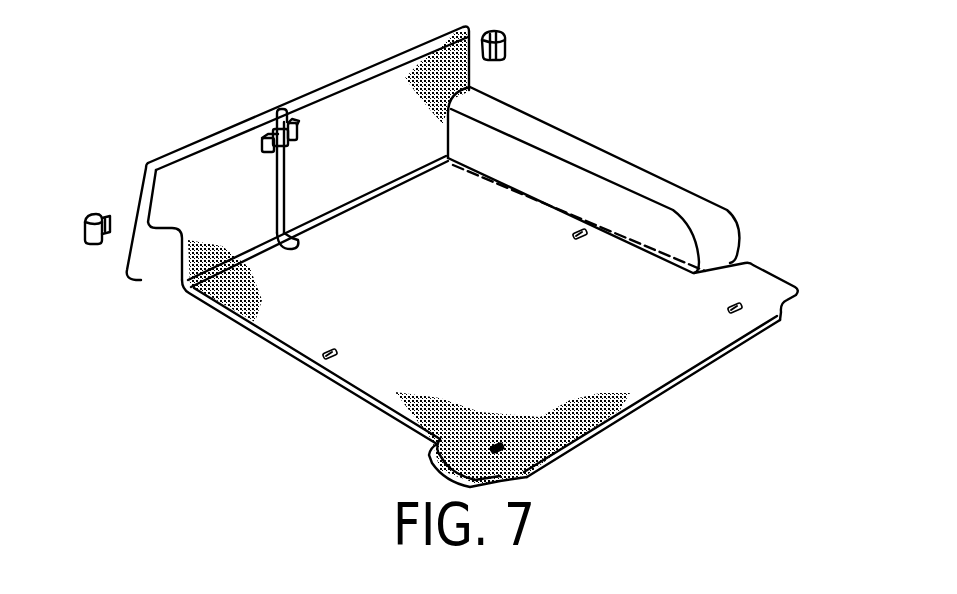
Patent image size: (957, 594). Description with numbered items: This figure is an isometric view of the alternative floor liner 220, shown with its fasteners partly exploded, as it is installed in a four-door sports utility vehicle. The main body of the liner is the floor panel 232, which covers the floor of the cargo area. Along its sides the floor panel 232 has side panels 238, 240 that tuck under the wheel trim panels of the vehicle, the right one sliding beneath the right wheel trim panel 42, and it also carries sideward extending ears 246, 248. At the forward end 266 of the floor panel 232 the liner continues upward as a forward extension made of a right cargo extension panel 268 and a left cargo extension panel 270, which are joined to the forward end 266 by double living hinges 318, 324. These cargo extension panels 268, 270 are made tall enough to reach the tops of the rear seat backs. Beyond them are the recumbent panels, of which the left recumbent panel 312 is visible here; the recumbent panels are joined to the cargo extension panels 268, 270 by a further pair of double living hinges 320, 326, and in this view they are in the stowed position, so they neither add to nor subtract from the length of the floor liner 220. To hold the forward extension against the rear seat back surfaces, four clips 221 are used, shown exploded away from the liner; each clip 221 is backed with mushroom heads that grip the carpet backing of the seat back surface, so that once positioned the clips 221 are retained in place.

The floor liner 220 is at (633, 114).
The clip 221 is at (297, 131).
The right wheel trim panel 42 is at (585, 194).
The floor panel 232 is at (503, 333).
The side panel 238 is at (613, 237).
The side panel 240 is at (327, 377).
The sideward extending ear 246 is at (760, 283).
The sideward extending ear 248 is at (438, 448).
The forward end 266 is at (400, 188).
The right cargo extension panel 268 is at (383, 172).
The left cargo extension panel 270 is at (263, 243).
The left recumbent panel 312 is at (152, 256).
The double living hinge 318 is at (327, 226).
The double living hinge 320 is at (363, 74).
The double living hinge 324 is at (261, 264).
The double living hinge 326 is at (217, 135).